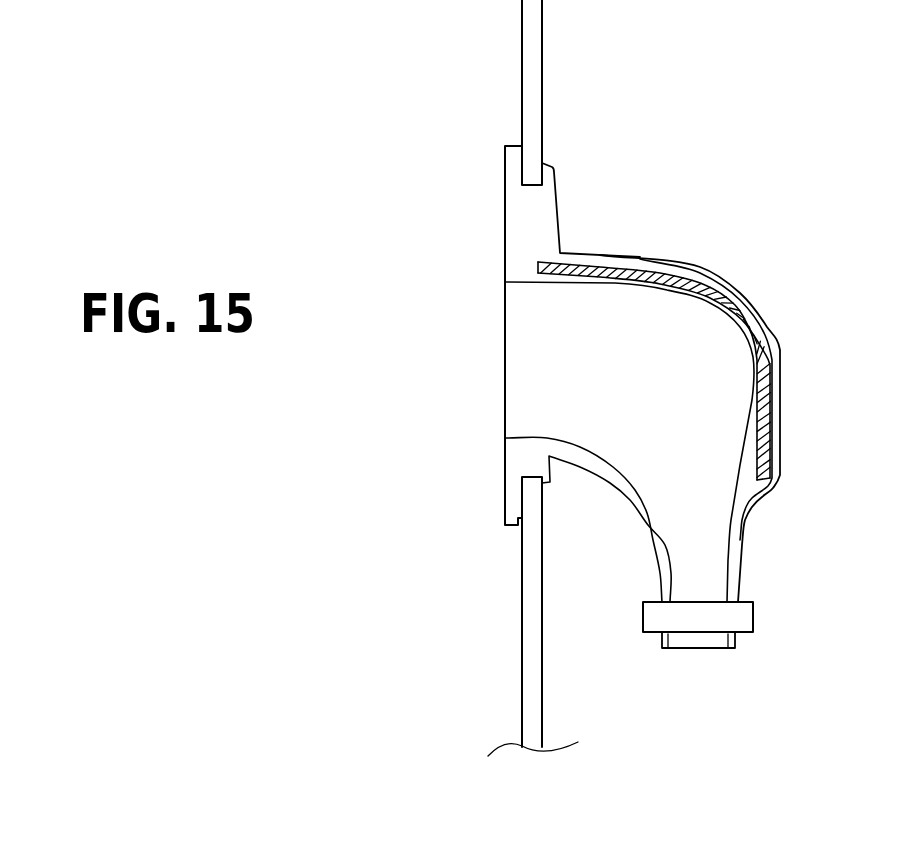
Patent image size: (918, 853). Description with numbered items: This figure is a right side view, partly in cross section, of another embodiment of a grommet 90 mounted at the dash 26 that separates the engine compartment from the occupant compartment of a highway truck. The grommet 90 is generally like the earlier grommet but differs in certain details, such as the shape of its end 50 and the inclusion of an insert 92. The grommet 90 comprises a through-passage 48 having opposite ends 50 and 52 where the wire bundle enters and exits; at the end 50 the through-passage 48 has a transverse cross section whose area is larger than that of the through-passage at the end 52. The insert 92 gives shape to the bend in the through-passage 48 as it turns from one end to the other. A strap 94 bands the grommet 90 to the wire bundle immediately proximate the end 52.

The dash 26 is at (543, 78).
The end 50 is at (505, 350).
The grommet 90 is at (606, 246).
The insert 92 is at (680, 272).
The through-passage 48 is at (757, 293).
The strap 94 is at (753, 618).
The end 52 is at (698, 648).